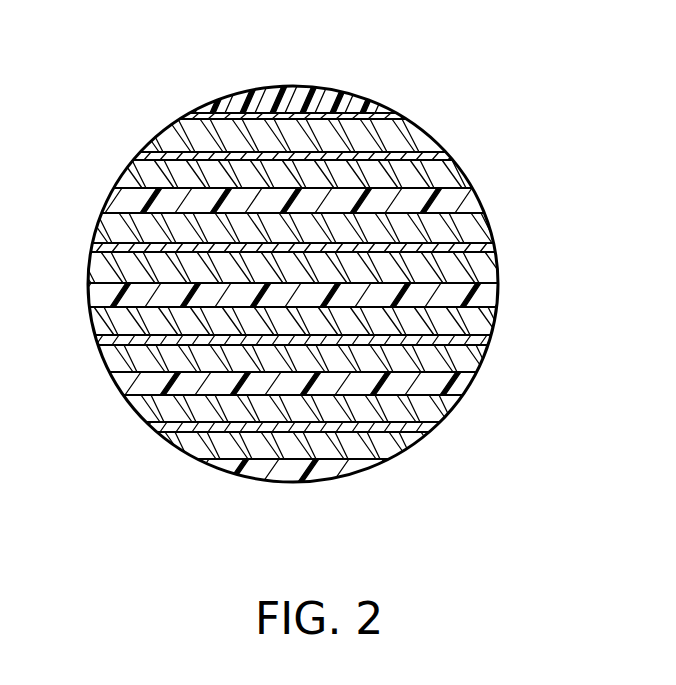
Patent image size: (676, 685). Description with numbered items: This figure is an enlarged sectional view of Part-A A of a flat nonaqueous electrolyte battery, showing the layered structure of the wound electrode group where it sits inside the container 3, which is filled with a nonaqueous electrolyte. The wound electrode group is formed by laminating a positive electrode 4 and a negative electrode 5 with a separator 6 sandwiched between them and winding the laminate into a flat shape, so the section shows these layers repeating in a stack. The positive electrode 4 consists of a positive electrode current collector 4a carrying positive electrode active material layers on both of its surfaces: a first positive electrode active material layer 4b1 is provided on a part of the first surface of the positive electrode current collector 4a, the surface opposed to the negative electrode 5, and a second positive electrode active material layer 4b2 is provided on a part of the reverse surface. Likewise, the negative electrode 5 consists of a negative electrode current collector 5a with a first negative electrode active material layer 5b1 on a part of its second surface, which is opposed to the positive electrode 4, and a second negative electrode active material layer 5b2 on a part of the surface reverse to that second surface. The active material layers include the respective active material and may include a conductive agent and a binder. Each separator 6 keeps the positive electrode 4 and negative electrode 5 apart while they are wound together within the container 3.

The Part- A is at (263, 92).
The container 3 is at (370, 102).
The positive electrode 4 is at (559, 195).
The positive electrode current collector 4a is at (470, 252).
The first positive electrode active material layer 4b1 is at (462, 233).
The second positive electrode active material layer 4b2 is at (470, 270).
The negative electrode 5 is at (533, 75).
The negative electrode current collector 5a is at (420, 156).
The first negative electrode active material layer 5b1 is at (423, 140).
The second negative electrode active material layer 5b2 is at (438, 177).
The separator 6 is at (130, 203).